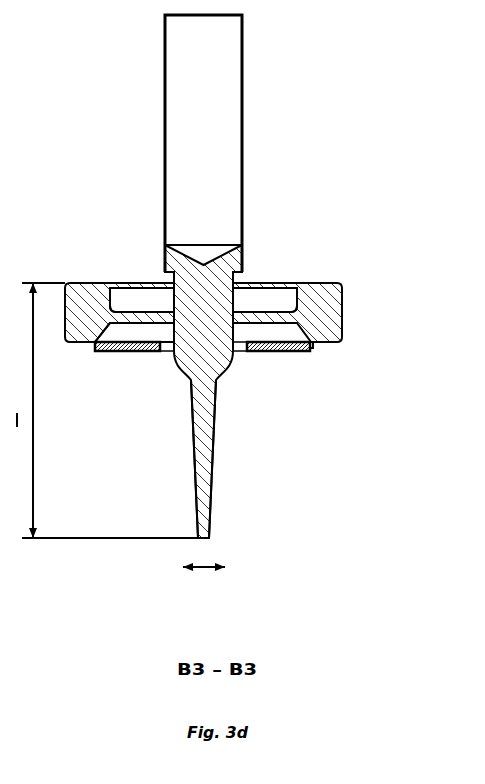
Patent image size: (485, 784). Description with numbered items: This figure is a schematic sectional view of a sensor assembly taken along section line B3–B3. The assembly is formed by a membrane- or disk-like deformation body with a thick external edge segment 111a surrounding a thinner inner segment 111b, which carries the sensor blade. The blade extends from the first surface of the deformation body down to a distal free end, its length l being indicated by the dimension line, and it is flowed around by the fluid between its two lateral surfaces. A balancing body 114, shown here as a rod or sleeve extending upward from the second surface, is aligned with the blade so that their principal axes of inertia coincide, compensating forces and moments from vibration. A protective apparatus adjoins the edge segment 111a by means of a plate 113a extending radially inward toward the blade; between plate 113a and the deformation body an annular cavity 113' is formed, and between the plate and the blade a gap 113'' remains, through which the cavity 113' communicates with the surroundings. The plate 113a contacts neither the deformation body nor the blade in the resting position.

The balancing body 114 is at (143, 107).
The external edge segment 111a is at (77, 288).
The inner segment 111b is at (138, 318).
The plate 113a is at (105, 353).
The cavity 113' is at (282, 376).
The gap 113'' is at (245, 393).